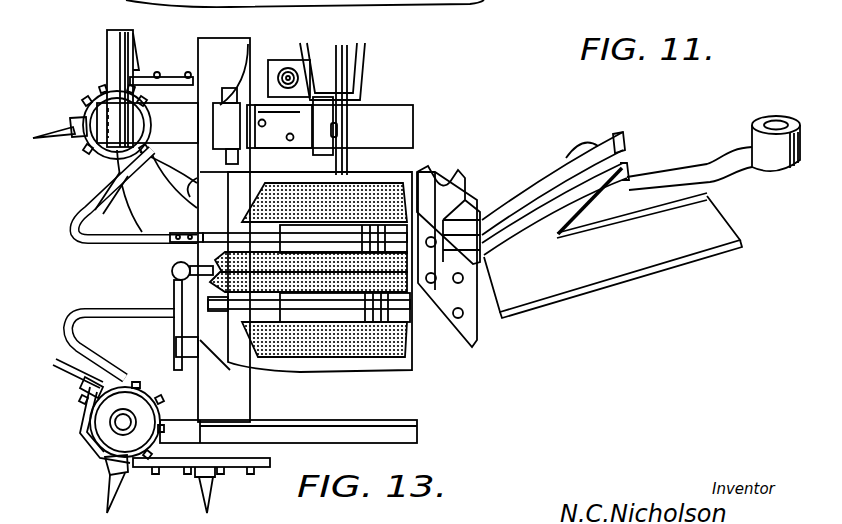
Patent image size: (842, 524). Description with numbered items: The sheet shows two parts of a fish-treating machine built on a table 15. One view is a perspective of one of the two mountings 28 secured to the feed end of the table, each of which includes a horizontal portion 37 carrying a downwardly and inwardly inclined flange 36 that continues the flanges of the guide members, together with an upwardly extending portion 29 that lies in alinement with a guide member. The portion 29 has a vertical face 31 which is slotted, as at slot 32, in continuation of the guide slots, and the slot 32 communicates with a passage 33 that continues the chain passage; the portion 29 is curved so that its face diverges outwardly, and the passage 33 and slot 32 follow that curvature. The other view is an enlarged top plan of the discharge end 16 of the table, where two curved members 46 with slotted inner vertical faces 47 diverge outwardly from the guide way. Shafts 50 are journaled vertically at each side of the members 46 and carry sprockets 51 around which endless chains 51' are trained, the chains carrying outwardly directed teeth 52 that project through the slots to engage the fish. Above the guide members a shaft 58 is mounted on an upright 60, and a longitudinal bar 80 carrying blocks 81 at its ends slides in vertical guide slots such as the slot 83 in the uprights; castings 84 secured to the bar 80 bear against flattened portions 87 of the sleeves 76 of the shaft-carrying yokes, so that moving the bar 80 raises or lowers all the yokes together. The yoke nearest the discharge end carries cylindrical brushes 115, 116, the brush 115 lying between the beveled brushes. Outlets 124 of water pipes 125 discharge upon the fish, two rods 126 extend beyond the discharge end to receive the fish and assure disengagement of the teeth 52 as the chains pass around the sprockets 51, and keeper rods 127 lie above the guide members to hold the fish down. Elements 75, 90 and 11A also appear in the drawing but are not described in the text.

In FIG. 13, the table 15 is at (413, 421).
In FIG. 13, the discharge end 16 is at (233, 398).
In FIG. 13, the member 46 is at (217, 370).
In FIG. 13, the inner vertical face 47 is at (122, 225).
In FIG. 13, the shaft 50 is at (122, 425).
In FIG. 13, the sprocket 51 is at (107, 299).
In FIG. 13, the endless chain 51' is at (203, 270).
In FIG. 13, the tooth 52 is at (53, 138).
In FIG. 13, the shaft 58 is at (117, 53).
In FIG. 13, the upright 60 is at (203, 130).
In FIG. 13, the U-shaped bracket 75 is at (350, 73).
In FIG. 13, the sleeve 76 is at (330, 163).
In FIG. 13, the bar 80 is at (410, 123).
In FIG. 13, the block 81 is at (220, 110).
In FIG. 13, the guide slot 83 is at (190, 175).
In FIG. 13, the casting 84 is at (338, 138).
In FIG. 13, the flattened portion 87 is at (318, 122).
In FIG. 13, the knob 90 is at (288, 68).
In FIG. 13, the magazine 11A is at (400, 177).
In FIG. 13, the cylindrical brush 115 is at (343, 238).
In FIG. 13, the cylindrical brush 116 is at (317, 333).
In FIG. 13, the outlet 124 is at (170, 282).
In FIG. 13, the water pipe 125 is at (118, 318).
In FIG. 13, the rod 126 is at (87, 241).
In FIG. 13, the keeper rod 127 is at (197, 243).
In FIG. 11, the mounting 28 is at (641, 180).
In FIG. 11, the upwardly extending portion 29 is at (553, 183).
In FIG. 11, the vertical face 31 is at (484, 249).
In FIG. 11, the slot 32 is at (567, 205).
In FIG. 11, the passage 33 is at (467, 228).
In FIG. 11, the flange 36 is at (627, 260).
In FIG. 11, the horizontal portion 37 is at (637, 200).